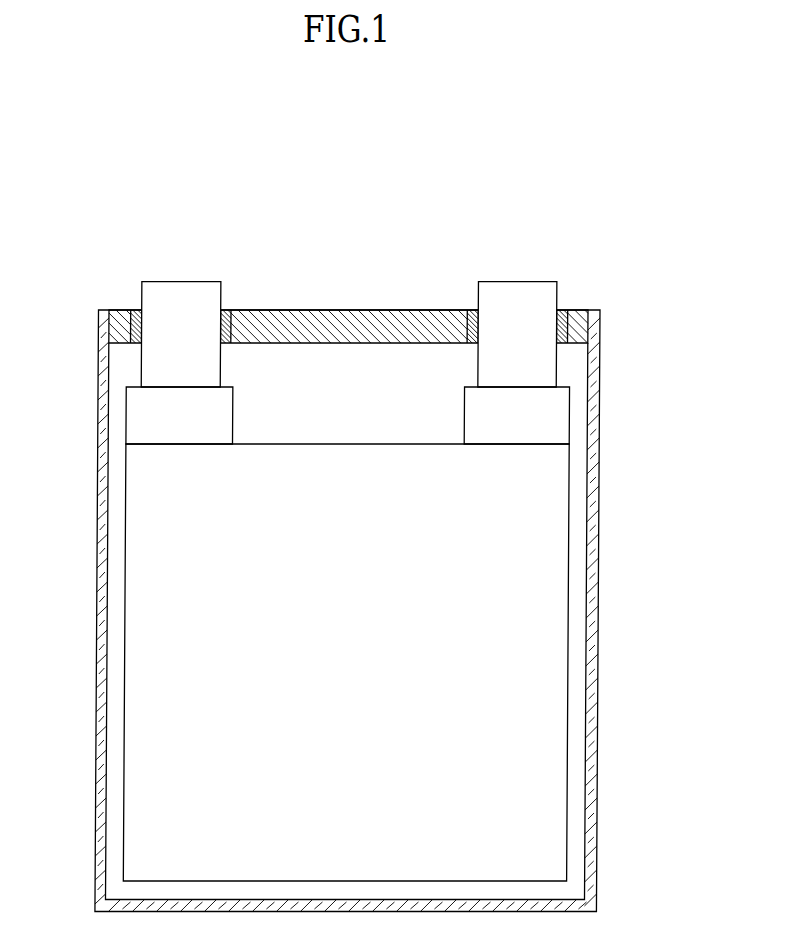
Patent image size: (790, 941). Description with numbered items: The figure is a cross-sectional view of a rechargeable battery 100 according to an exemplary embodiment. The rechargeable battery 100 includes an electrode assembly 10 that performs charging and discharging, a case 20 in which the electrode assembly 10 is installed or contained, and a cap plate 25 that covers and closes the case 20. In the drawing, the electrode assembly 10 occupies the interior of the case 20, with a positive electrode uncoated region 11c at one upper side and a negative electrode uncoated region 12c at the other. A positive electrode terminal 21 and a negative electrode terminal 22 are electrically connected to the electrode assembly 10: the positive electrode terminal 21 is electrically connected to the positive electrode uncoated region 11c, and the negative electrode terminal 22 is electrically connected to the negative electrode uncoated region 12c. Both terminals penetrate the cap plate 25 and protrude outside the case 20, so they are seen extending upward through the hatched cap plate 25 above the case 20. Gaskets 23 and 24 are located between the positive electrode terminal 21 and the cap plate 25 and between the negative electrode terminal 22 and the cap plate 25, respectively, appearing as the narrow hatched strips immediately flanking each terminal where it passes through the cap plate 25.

The rechargeable battery 100 is at (368, 138).
The electrode assembly 10 is at (350, 548).
The positive electrode uncoated region 11c is at (138, 421).
The negative electrode uncoated region 12c is at (555, 418).
The case 20 is at (590, 610).
The positive electrode terminal 21 is at (178, 297).
The negative electrode terminal 22 is at (521, 300).
The gasket 23 is at (225, 307).
The gasket 24 is at (469, 310).
The cap plate 25 is at (296, 318).